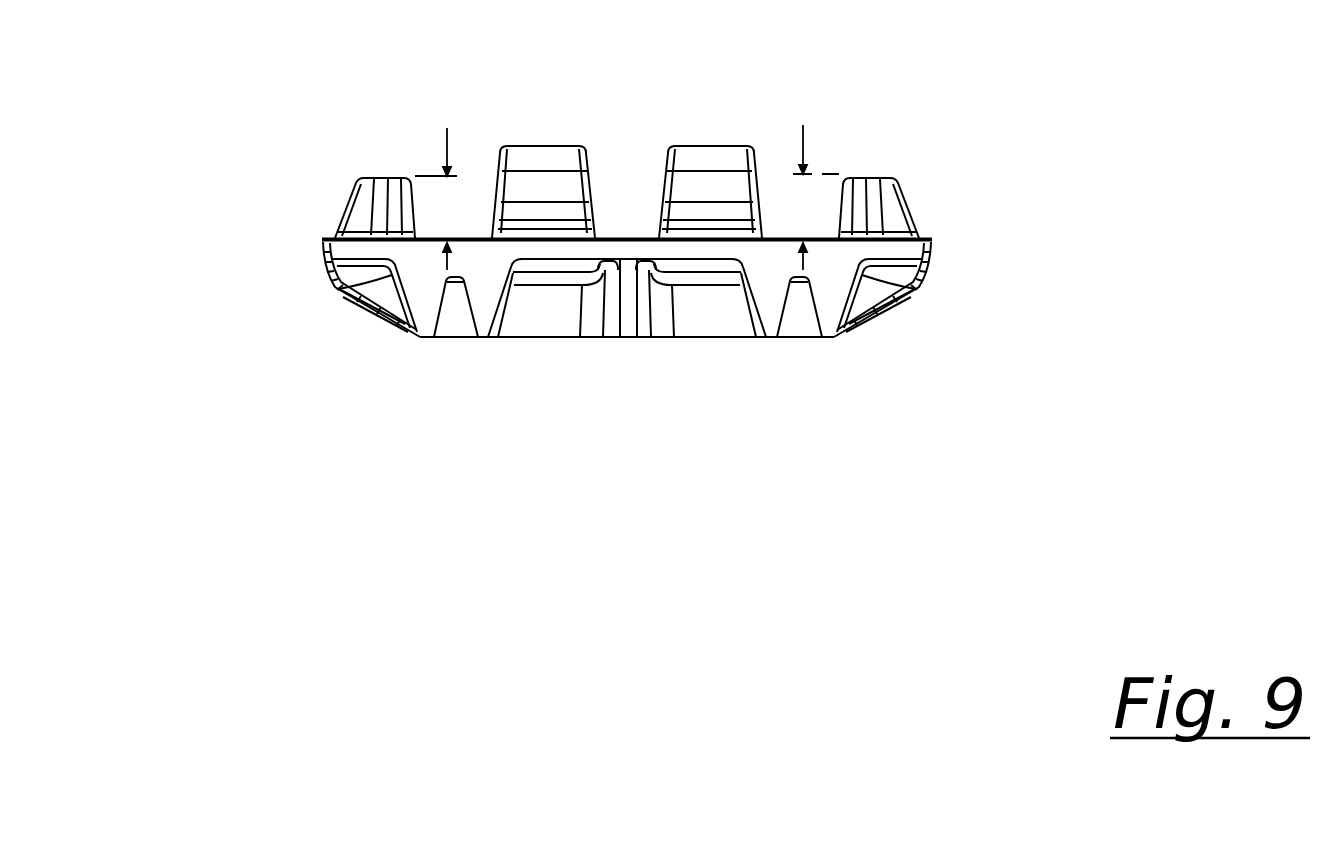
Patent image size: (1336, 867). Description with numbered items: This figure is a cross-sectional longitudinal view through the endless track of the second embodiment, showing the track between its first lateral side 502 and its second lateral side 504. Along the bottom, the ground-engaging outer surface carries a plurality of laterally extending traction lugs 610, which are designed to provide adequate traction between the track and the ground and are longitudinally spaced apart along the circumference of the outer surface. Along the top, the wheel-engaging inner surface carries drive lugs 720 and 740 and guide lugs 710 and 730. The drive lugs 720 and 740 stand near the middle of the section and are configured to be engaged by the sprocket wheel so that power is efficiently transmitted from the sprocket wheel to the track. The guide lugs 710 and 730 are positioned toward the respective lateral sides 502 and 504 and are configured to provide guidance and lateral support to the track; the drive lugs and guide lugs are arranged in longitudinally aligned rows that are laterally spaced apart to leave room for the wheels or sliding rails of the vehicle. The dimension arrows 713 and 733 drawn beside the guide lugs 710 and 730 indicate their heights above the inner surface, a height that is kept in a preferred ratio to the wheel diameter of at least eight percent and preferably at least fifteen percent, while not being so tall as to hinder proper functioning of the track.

The first lateral side 502 is at (322, 246).
The second lateral side 504 is at (935, 243).
The traction lug 610 is at (714, 320).
The guide lug 710 is at (357, 198).
The protrusion height 713 is at (437, 174).
The drive lug 720 is at (539, 156).
The guide lug 730 is at (876, 196).
The protrusion height 733 is at (828, 171).
The drive lug 740 is at (700, 156).